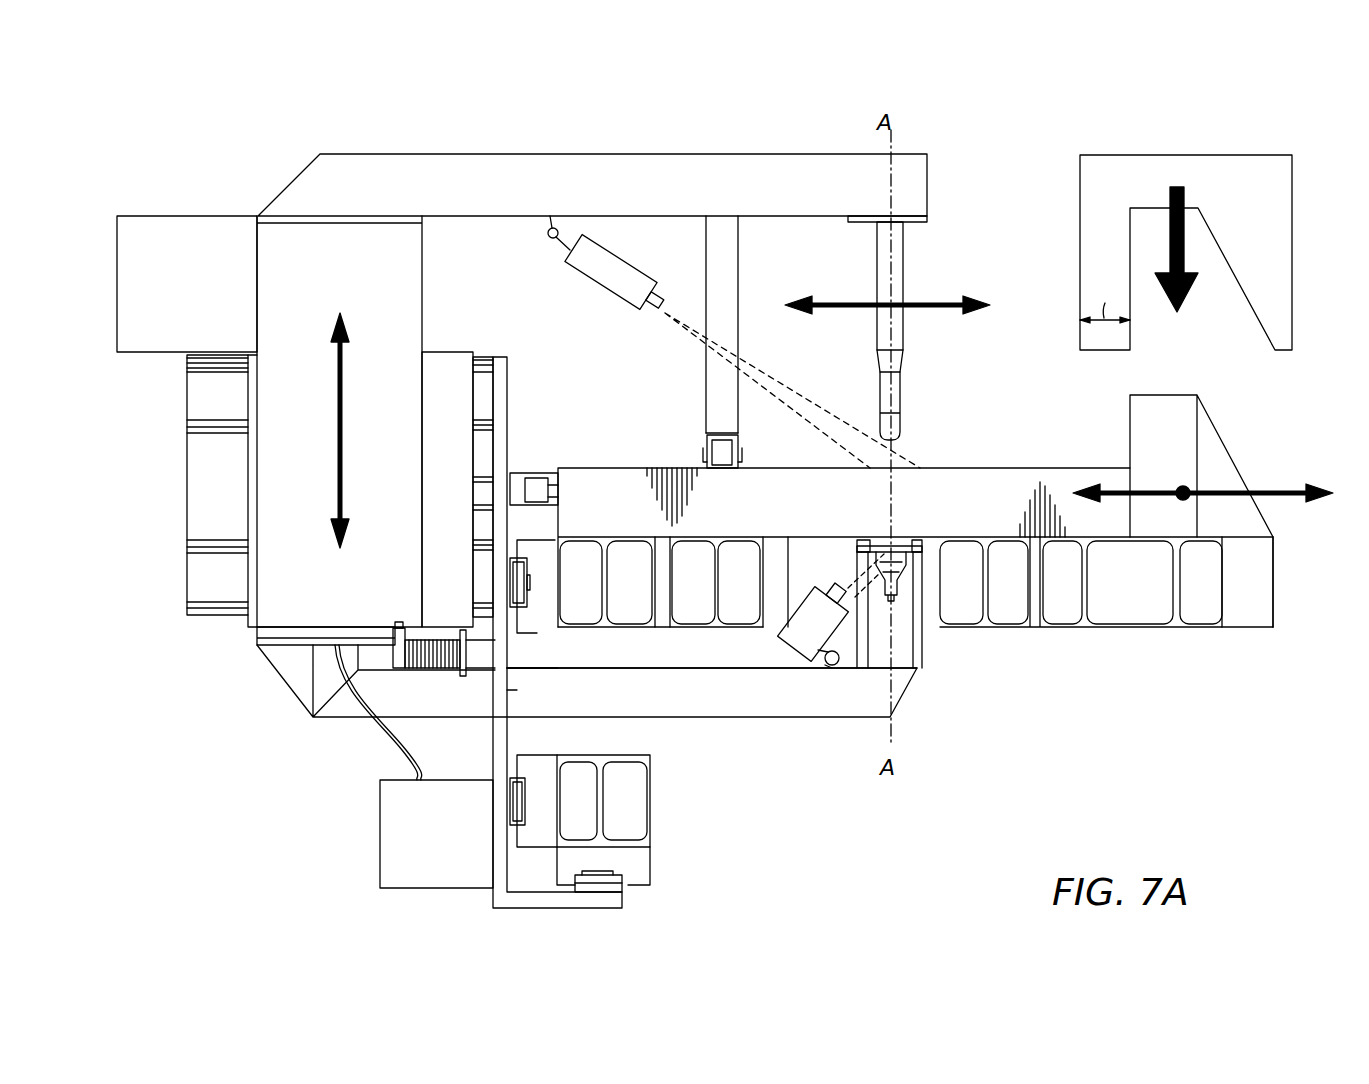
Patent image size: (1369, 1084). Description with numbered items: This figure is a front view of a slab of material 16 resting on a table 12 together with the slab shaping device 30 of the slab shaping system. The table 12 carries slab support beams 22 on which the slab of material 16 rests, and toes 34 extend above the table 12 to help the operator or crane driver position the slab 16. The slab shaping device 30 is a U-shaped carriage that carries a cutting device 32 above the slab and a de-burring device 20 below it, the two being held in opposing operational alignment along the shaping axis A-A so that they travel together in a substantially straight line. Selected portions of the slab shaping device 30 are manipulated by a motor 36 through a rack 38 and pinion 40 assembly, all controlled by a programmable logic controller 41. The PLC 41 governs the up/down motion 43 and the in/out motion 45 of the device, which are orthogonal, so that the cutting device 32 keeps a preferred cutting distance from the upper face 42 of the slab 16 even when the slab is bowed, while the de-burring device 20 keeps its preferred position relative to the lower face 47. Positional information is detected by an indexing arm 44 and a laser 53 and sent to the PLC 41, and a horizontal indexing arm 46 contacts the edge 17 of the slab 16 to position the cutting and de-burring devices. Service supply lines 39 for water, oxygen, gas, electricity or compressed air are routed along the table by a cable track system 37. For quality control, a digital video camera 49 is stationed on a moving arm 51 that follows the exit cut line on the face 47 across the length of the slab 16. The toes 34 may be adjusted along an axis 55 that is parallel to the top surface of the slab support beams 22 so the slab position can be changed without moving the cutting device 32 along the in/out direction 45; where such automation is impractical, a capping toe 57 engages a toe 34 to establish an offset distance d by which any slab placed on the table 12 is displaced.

The table 12 is at (918, 706).
The slab of material 16 is at (1000, 467).
The edge 17 is at (560, 522).
The de-burring device 20 is at (897, 606).
The slab support beams 22 is at (605, 627).
The slab shaping device 30 is at (1004, 200).
The cutting device 32 is at (903, 383).
The toes 34 is at (1172, 408).
The motor 36 is at (440, 668).
The cable track system 37 is at (380, 797).
The rack 38 is at (540, 634).
The service supply lines 39 is at (400, 749).
The pinion 40 is at (540, 682).
The programmable logic controller 41 is at (117, 238).
The upper face 42 is at (768, 468).
The up/down motion 43 is at (340, 479).
The indexing arm 44 is at (706, 251).
The in/out motion 45 is at (960, 303).
The horizontal slab shaping device indexing arm 46 is at (513, 476).
The lower face 47 is at (788, 540).
The digital video camera 49 is at (836, 588).
The moving arm 51 is at (829, 709).
The laser 53 is at (581, 272).
The axis 55 is at (1286, 491).
The capping toe 57 is at (1270, 155).